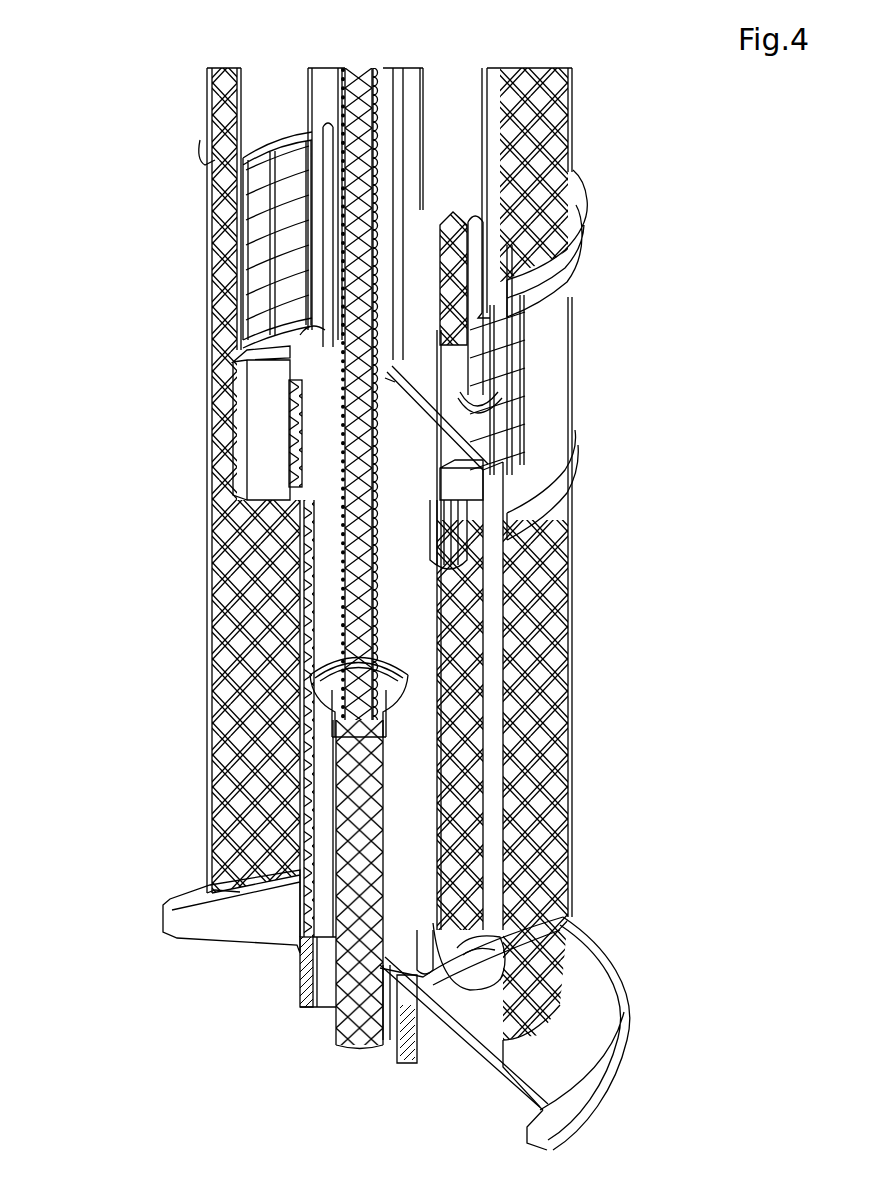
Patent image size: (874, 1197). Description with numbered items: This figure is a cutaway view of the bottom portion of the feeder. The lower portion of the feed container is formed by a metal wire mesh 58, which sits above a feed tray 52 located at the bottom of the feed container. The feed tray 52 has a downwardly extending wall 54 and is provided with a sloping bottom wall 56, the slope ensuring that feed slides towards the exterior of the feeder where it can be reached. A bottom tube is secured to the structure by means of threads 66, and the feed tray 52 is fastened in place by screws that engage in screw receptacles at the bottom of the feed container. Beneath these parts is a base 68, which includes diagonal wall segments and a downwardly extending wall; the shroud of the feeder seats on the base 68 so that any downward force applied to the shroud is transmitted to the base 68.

The feed tray 52 is at (290, 370).
The downwardly extending wall 54 is at (490, 585).
The sloping bottom wall 56 is at (449, 401).
The metal wire mesh 58 is at (268, 243).
The threads 66 is at (294, 455).
The base 68 is at (240, 920).